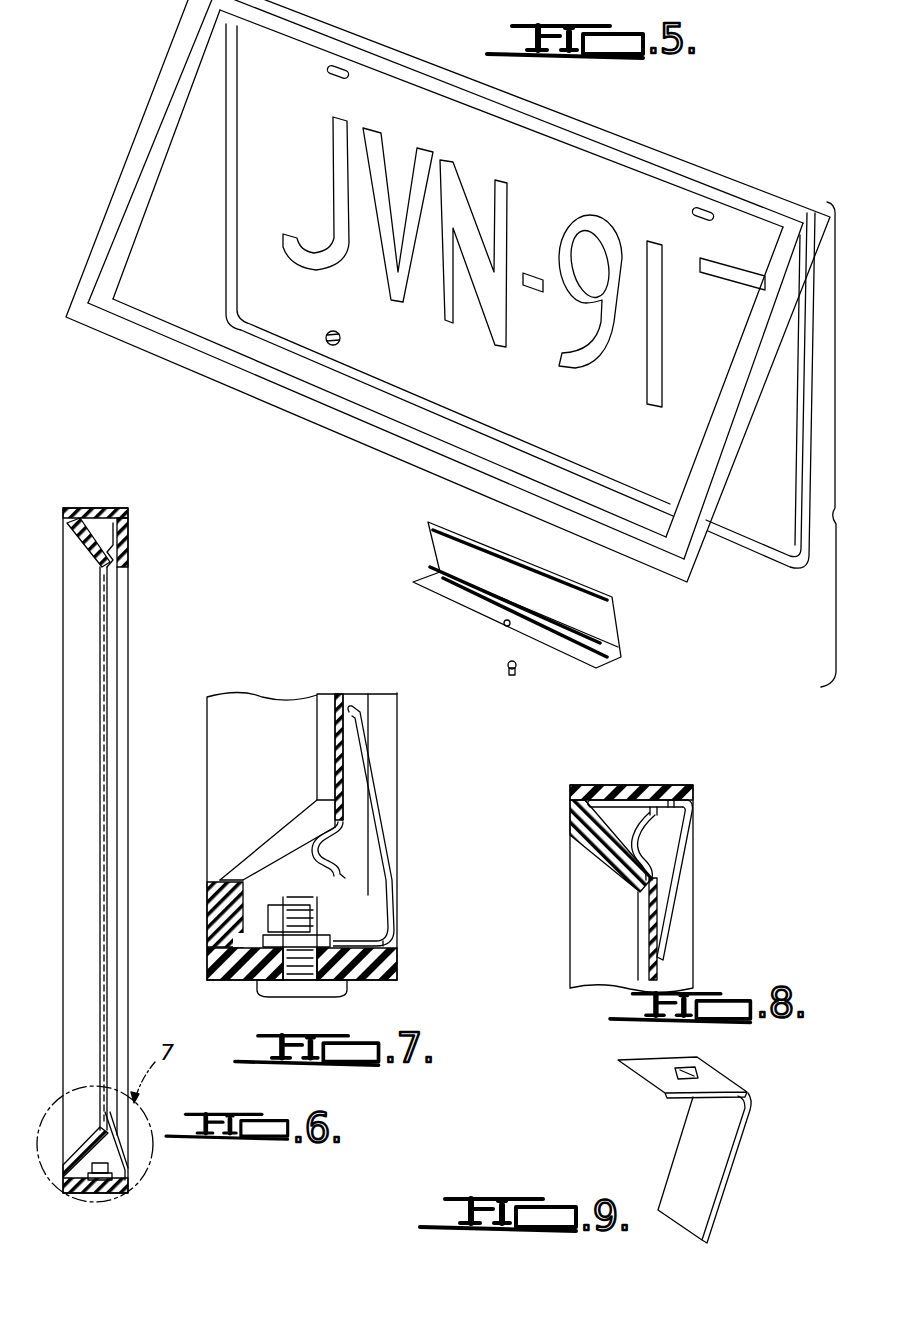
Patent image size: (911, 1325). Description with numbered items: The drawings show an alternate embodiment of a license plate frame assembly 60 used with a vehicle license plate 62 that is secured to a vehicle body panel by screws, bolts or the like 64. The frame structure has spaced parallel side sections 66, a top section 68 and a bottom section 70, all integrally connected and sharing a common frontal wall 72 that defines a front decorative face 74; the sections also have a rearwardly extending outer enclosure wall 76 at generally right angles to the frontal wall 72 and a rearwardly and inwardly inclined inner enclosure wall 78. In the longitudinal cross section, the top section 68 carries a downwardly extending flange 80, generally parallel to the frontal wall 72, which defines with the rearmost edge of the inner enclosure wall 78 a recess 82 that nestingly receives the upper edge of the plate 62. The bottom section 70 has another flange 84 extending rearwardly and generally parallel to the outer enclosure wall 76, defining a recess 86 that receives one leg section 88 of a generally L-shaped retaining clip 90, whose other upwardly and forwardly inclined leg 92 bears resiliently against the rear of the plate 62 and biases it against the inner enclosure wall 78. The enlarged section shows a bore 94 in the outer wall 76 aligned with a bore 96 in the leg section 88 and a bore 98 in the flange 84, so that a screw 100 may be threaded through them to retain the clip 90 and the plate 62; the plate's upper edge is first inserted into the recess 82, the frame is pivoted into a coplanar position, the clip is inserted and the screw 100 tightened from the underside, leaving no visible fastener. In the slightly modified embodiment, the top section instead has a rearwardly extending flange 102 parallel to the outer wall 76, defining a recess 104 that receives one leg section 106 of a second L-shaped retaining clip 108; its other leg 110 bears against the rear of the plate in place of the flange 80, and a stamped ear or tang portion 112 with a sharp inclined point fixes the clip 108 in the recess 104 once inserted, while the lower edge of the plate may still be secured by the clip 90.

In FIG. 5, the license plate frame assembly 60 is at (232, 395).
In FIG. 5, the vehicle license plate 62 is at (224, 265).
In FIG. 5, the screws, bolts or the like 64 is at (346, 345).
In FIG. 5, the side sections 66 is at (140, 145).
In FIG. 5, the top section 68 is at (582, 142).
In FIG. 5, the bottom section 70 is at (367, 433).
In FIG. 6, the frontal wall 72 is at (88, 520).
In FIG. 7, the frontal wall 72 is at (210, 925).
In FIG. 6, the front decorative face 74 is at (70, 525).
In FIG. 7, the front decorative face 74 is at (210, 943).
In FIG. 6, the outer enclosure wall 76 is at (115, 518).
In FIG. 7, the outer enclosure wall 76 is at (395, 985).
In FIG. 6, the inner enclosure wall 78 is at (97, 558).
In FIG. 7, the inner enclosure wall 78 is at (282, 826).
In FIG. 6, the downwardly extending flange 80 is at (130, 538).
In FIG. 6, the recess 82 is at (114, 555).
In FIG. 7, the flange 84 is at (285, 905).
In FIG. 7, the recess 86 is at (258, 870).
In FIG. 5, the leg section 88 is at (575, 648).
In FIG. 7, the leg section 88 is at (348, 982).
In FIG. 5, the retaining clip 90 is at (552, 614).
In FIG. 6, the retaining clip 90 is at (125, 1150).
In FIG. 7, the retaining clip 90 is at (352, 858).
In FIG. 5, the inclined leg 92 is at (563, 594).
In FIG. 7, the inclined leg 92 is at (370, 812).
In FIG. 7, the bore 94 is at (262, 976).
In FIG. 5, the bore 96 is at (510, 623).
In FIG. 7, the bore 96 is at (302, 992).
In FIG. 7, the bore 98 is at (335, 872).
In FIG. 5, the screw 100 is at (506, 670).
In FIG. 6, the screw 100 is at (100, 1195).
In FIG. 7, the screw 100 is at (278, 993).
In FIG. 8, the rearwardly extending flange 102 is at (576, 860).
In FIG. 8, the recess 104 is at (581, 826).
In FIG. 8, the leg section 106 is at (690, 796).
In FIG. 9, the leg section 106 is at (640, 1067).
In FIG. 8, the retaining clip 108 is at (685, 843).
In FIG. 9, the retaining clip 108 is at (697, 1145).
In FIG. 8, the leg 110 is at (670, 918).
In FIG. 9, the leg 110 is at (737, 1167).
In FIG. 8, the ear or tang portion 112 is at (661, 798).
In FIG. 9, the ear or tang portion 112 is at (693, 1064).